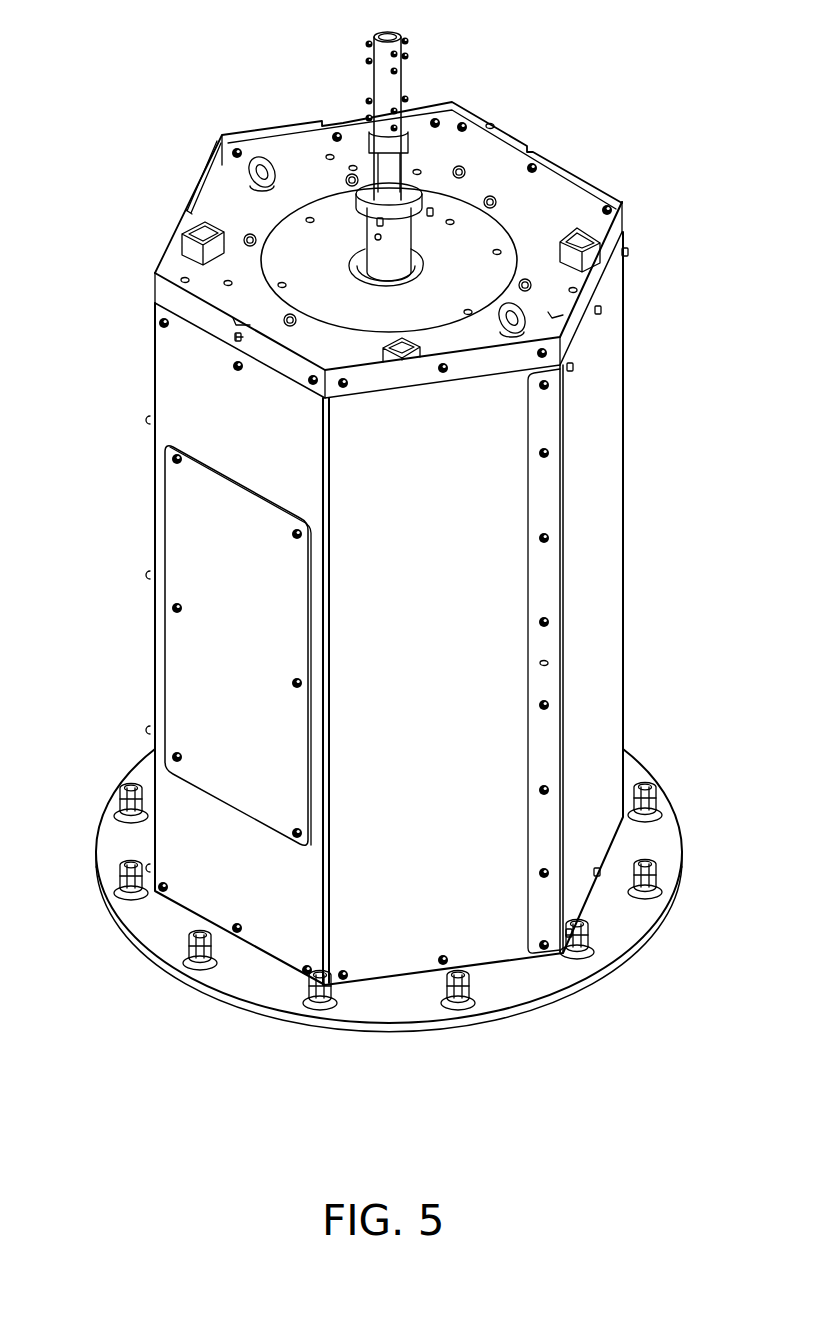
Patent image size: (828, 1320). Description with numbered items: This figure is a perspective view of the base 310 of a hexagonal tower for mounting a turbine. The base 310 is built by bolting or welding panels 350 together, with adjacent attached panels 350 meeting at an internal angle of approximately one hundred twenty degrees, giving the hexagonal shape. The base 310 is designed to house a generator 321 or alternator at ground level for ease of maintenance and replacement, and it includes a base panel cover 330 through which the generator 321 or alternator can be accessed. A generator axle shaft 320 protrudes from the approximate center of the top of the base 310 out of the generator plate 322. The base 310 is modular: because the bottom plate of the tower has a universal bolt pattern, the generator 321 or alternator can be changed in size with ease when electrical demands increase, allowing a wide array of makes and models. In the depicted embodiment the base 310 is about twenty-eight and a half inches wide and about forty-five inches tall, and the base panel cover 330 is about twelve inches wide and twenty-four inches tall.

The base 310 is at (689, 984).
The generator axle shaft 320 is at (387, 87).
The generator 321 is at (360, 262).
The generator plate 322 is at (465, 243).
The base panel cover 330 is at (198, 557).
The panels 350 is at (600, 557).